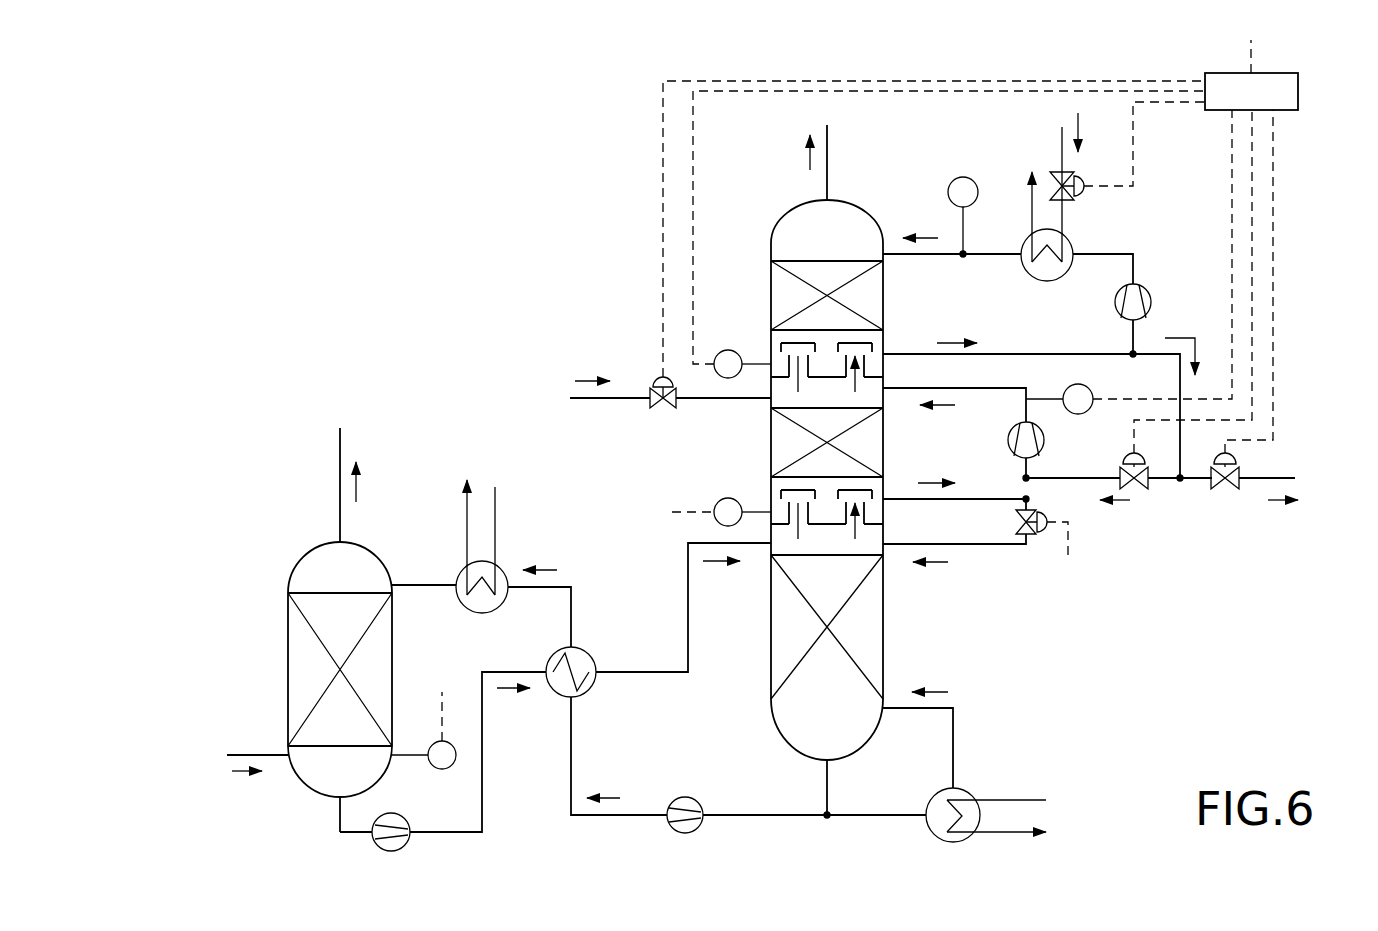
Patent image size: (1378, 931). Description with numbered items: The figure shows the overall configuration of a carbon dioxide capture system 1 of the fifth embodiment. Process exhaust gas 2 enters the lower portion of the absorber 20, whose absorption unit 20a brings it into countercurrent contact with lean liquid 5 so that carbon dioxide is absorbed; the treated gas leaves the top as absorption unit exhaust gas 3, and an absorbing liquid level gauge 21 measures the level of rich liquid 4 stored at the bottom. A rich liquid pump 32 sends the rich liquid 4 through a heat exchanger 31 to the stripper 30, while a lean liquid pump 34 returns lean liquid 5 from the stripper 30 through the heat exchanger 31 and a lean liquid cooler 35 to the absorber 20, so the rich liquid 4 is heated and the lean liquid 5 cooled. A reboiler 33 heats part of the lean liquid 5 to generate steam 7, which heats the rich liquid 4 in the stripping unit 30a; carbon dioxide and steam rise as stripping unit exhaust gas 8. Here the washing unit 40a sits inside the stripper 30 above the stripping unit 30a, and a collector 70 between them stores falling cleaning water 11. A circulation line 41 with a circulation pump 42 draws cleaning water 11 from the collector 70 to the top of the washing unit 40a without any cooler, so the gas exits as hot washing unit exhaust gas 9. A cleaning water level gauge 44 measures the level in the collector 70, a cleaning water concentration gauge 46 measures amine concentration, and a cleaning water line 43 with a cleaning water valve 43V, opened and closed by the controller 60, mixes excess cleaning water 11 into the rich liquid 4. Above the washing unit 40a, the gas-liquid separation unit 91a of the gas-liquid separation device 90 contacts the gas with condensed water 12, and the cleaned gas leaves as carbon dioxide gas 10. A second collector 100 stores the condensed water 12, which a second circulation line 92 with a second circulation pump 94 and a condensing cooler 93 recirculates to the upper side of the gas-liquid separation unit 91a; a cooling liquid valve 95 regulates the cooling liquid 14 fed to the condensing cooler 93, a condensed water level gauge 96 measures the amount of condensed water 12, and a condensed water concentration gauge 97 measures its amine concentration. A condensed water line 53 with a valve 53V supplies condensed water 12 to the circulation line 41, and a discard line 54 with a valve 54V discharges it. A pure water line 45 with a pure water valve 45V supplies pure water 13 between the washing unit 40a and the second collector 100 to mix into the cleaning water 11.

The carbon dioxide capture system 1 is at (435, 168).
The process exhaust gas 2 is at (245, 778).
The absorption unit exhaust gas 3 is at (358, 487).
The rich liquid 4 is at (512, 700).
The lean liquid 5 is at (552, 567).
The steam 7 is at (938, 686).
The stripping unit exhaust gas 8 is at (800, 540).
The washing unit exhaust gas 9 is at (800, 385).
The carbon dioxide gas 10 is at (805, 150).
The cleaning water 11 is at (933, 480).
The condensed water 12 is at (930, 236).
The pure water 13 is at (585, 381).
The cooling liquid 14 is at (1082, 135).
The absorber 20 is at (278, 643).
The absorption unit 20a is at (302, 695).
The absorbing liquid level gauge 21 is at (456, 758).
The stripper 30 is at (905, 628).
The stripping unit 30a is at (783, 653).
The heat exchanger 31 is at (590, 650).
The rich liquid pump 32 is at (403, 812).
The reboiler 33 is at (975, 790).
The lean liquid pump 34 is at (687, 797).
The lean liquid cooler 35 is at (495, 608).
The washing unit 40a is at (773, 438).
The circulation line 41 is at (1000, 388).
The circulation pump 42 is at (1010, 445).
The cleaning water line 43 is at (1008, 550).
The cleaning water valve 43V is at (1013, 522).
The cleaning water level gauge 44 is at (716, 500).
The pure water line 45 is at (697, 400).
The pure water valve 45V is at (656, 375).
The cleaning water concentration gauge 46 is at (1095, 386).
The condensed water line 53 is at (1060, 478).
The control valve 53V is at (1140, 490).
The discard line 54 is at (1197, 483).
The control valve 54V is at (1228, 490).
The controller 60 is at (1300, 92).
The collector 70 is at (777, 520).
The gas-liquid separation device 90 is at (893, 187).
The gas-liquid separation unit 91a is at (810, 270).
The second circulation line 92 is at (1108, 252).
The condensing cooler 93 is at (1043, 283).
The second circulation pump 94 is at (1116, 305).
The cooling liquid valve 95 is at (1056, 180).
The condensed water level gauge 96 is at (726, 350).
The condensed water concentration gauge 97 is at (963, 177).
The second collector 100 is at (777, 370).